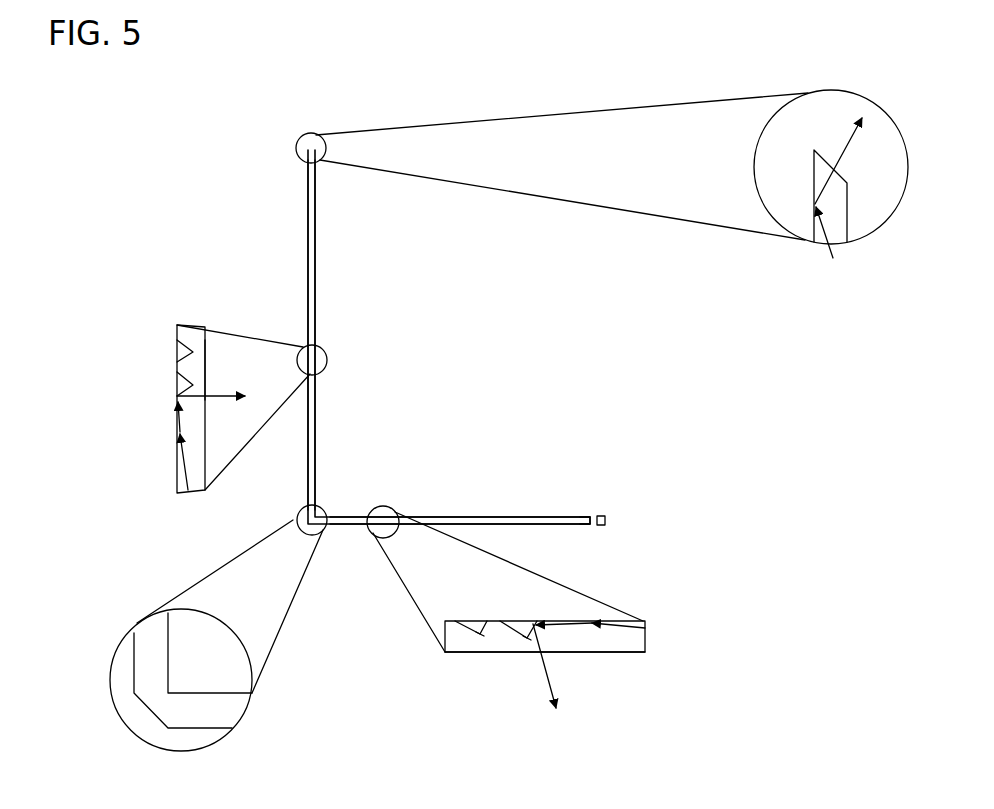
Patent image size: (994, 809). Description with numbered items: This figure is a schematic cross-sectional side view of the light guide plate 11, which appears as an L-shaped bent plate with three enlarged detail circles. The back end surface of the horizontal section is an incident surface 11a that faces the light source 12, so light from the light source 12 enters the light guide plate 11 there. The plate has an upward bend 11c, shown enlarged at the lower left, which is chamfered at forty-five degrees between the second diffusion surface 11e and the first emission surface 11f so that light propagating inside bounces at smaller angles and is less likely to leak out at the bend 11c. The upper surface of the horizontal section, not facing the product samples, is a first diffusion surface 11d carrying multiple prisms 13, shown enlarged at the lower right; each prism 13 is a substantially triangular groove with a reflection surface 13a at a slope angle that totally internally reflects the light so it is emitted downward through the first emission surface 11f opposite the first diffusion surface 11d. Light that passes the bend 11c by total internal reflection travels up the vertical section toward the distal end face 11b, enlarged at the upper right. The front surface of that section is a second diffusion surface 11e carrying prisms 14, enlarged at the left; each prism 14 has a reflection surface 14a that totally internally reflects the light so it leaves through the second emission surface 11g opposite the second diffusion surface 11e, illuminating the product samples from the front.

The light guide plate 11 is at (284, 182).
The incident surface 11a is at (593, 515).
The distal end face 11b is at (305, 136).
The bend 11c is at (296, 519).
The first diffusion surface 11d is at (465, 515).
The second diffusion surface 11e is at (307, 237).
The first emission surface 11f is at (515, 525).
The second emission surface 11g is at (316, 287).
The light source 12 is at (605, 524).
The prisms 13 is at (527, 637).
The reflection surface 13a is at (530, 640).
The prisms 14 is at (190, 386).
The reflection surface 14a is at (206, 362).